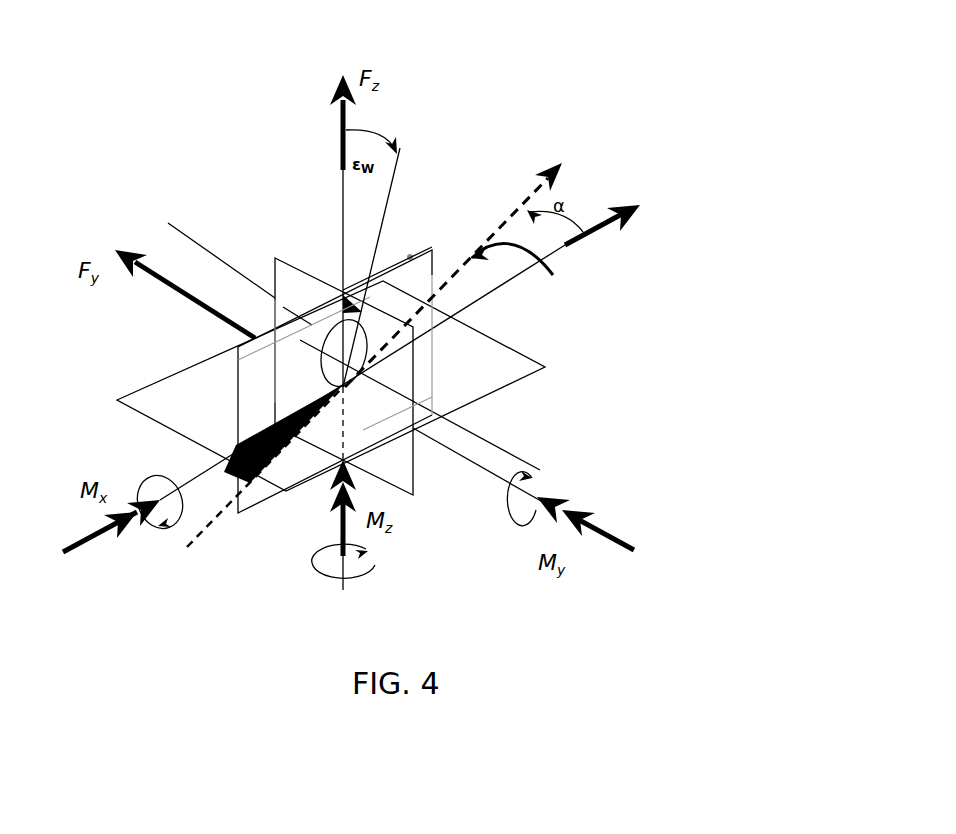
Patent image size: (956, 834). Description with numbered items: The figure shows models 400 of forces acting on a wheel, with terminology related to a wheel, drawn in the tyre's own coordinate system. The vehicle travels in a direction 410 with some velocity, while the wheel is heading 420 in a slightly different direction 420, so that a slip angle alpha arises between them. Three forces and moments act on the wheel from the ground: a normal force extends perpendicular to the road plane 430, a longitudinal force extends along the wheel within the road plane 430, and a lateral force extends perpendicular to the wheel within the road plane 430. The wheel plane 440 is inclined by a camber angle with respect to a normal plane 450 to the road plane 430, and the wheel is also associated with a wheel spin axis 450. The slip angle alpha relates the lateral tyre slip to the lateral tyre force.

The models of forces acting on a wheel 400 is at (90, 76).
The direction of vehicle travel 410 is at (389, 343).
The wheel heading direction 420 is at (413, 336).
The road plane 430 is at (520, 390).
The wheel plane 440 is at (540, 291).
The normal plane / wheel spin axis 450 is at (412, 259).